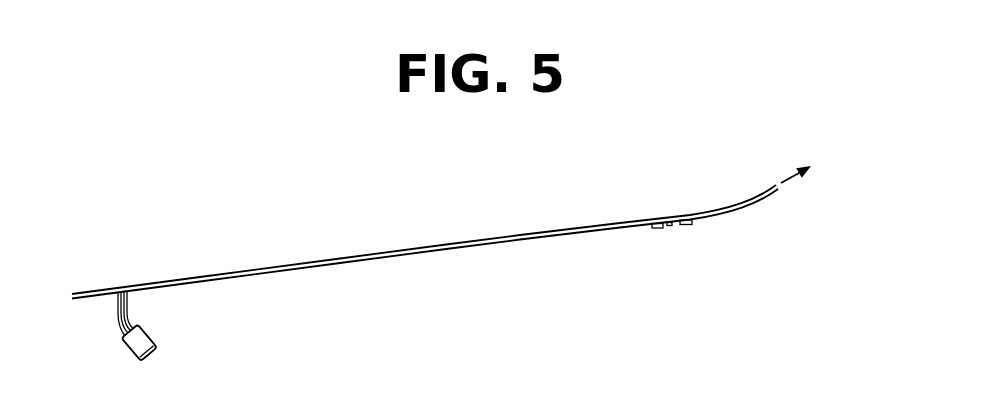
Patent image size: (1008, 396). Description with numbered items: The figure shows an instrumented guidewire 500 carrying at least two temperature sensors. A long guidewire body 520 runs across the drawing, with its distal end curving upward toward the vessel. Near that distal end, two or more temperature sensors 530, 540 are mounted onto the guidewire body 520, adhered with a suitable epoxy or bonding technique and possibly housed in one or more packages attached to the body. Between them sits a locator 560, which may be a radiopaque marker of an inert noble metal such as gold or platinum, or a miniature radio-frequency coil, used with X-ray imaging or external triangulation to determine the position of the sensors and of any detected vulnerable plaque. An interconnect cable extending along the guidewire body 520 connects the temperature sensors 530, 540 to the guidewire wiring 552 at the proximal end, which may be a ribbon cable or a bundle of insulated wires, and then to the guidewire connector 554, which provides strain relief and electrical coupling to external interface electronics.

The instrumented guidewire 500 is at (143, 148).
The guidewire body 520 is at (378, 253).
The temperature sensor 530 is at (688, 219).
The temperature sensor 540 is at (662, 229).
The locator 560 is at (670, 226).
The guidewire wiring 552 is at (113, 310).
The guidewire connector 554 is at (150, 330).